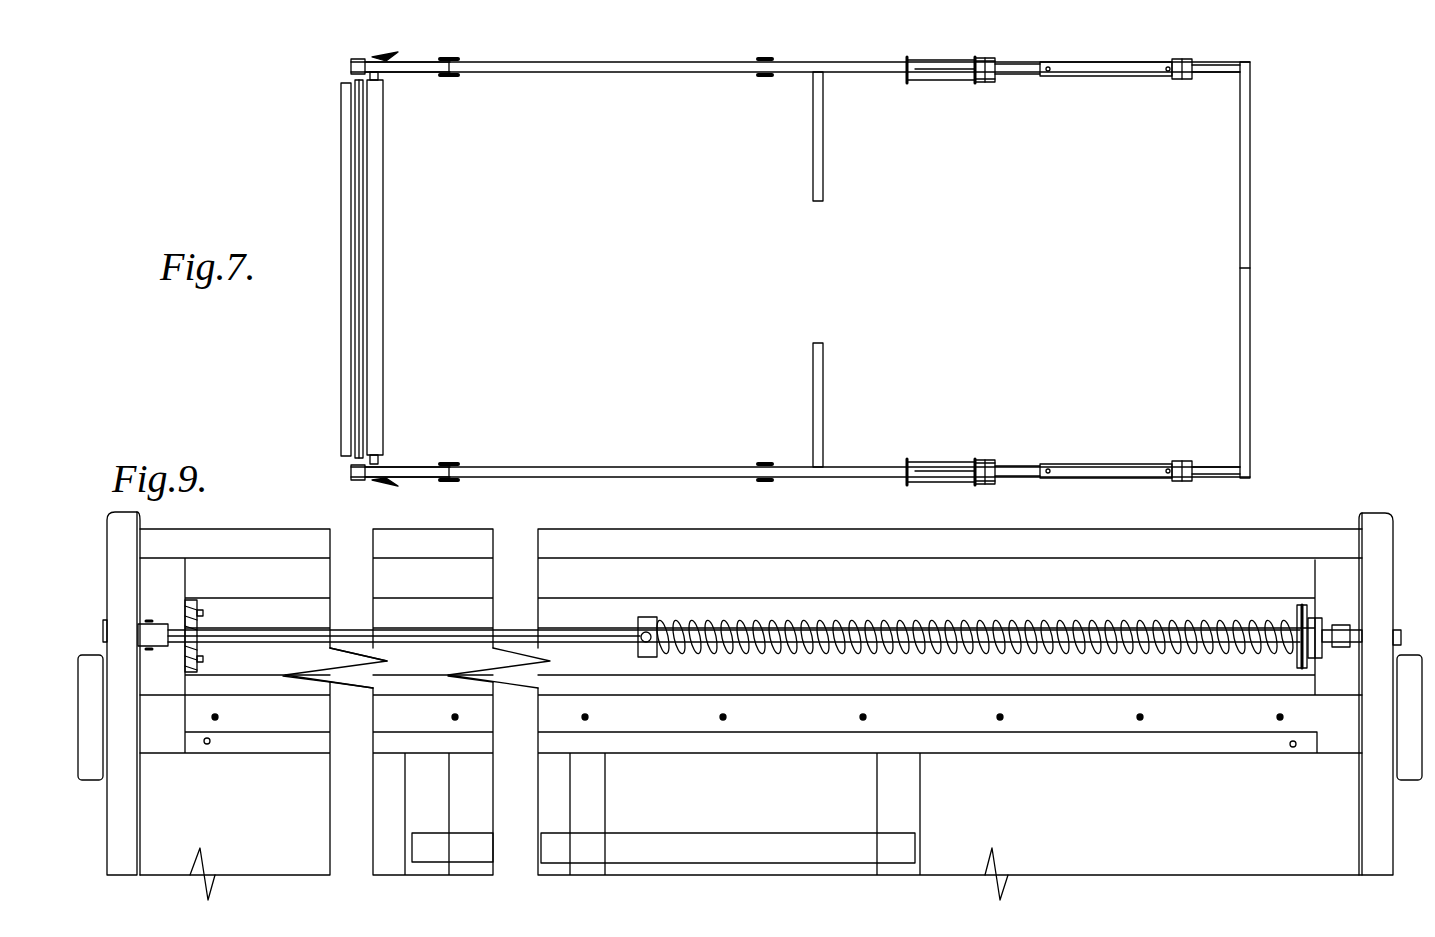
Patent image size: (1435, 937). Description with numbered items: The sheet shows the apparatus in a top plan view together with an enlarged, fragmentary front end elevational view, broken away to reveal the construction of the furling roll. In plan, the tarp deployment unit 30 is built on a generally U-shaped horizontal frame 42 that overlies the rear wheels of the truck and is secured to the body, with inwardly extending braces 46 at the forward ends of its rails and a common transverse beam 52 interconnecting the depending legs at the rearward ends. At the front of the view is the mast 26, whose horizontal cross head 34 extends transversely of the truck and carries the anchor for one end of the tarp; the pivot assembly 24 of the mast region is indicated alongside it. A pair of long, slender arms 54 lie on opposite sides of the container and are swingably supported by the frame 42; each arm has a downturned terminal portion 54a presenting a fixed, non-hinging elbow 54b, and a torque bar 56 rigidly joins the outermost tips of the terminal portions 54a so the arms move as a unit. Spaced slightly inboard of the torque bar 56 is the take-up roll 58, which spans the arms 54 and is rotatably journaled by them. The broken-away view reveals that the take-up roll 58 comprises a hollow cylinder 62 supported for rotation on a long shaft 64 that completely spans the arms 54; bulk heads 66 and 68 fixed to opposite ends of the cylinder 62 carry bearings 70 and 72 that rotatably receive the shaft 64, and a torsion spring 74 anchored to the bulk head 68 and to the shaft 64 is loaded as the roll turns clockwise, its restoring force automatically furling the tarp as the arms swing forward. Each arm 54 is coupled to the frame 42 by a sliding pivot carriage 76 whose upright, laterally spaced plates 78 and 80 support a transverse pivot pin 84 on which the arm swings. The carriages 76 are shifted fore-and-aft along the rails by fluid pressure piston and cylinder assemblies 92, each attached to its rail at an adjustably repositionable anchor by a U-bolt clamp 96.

In FIG. 7, the pivot assembly 24 is at (336, 72).
In FIG. 7, the mast 26 is at (333, 418).
In FIG. 7, the tarp deployment unit 30 is at (823, 50).
In FIG. 7, the cross head 34 is at (346, 176).
In FIG. 7, the frame 42 is at (1260, 156).
In FIG. 7, the brace 46 is at (815, 175).
In FIG. 7, the transverse beam 52 is at (1250, 424).
In FIG. 7, the arm 54 is at (708, 73).
In FIG. 9, the arm 54 is at (118, 585).
In FIG. 7, the terminal portion 54a is at (412, 66).
In FIG. 7, the elbow 54b is at (454, 76).
In FIG. 7, the torque bar 56 is at (375, 192).
In FIG. 7, the take-up roll 58 is at (392, 308).
In FIG. 9, the take-up roll 58 is at (1063, 592).
In FIG. 9, the hollow cylinder 62 is at (775, 598).
In FIG. 9, the shaft 64 is at (635, 628).
In FIG. 9, the bulk head 66 is at (198, 626).
In FIG. 9, the bulk head 68 is at (1298, 620).
In FIG. 9, the bearing 70 is at (182, 622).
In FIG. 9, the bearing 72 is at (1318, 650).
In FIG. 9, the torsion spring 74 is at (945, 625).
In FIG. 7, the sliding pivot carriage 76 is at (957, 52).
In FIG. 7, the plate 78 is at (960, 81).
In FIG. 7, the plate 80 is at (1000, 62).
In FIG. 7, the pivot pin 84 is at (975, 82).
In FIG. 7, the fluid pressure piston and cylinder assembly 92 is at (1105, 70).
In FIG. 7, the U-bolt clamp 96 is at (1200, 68).